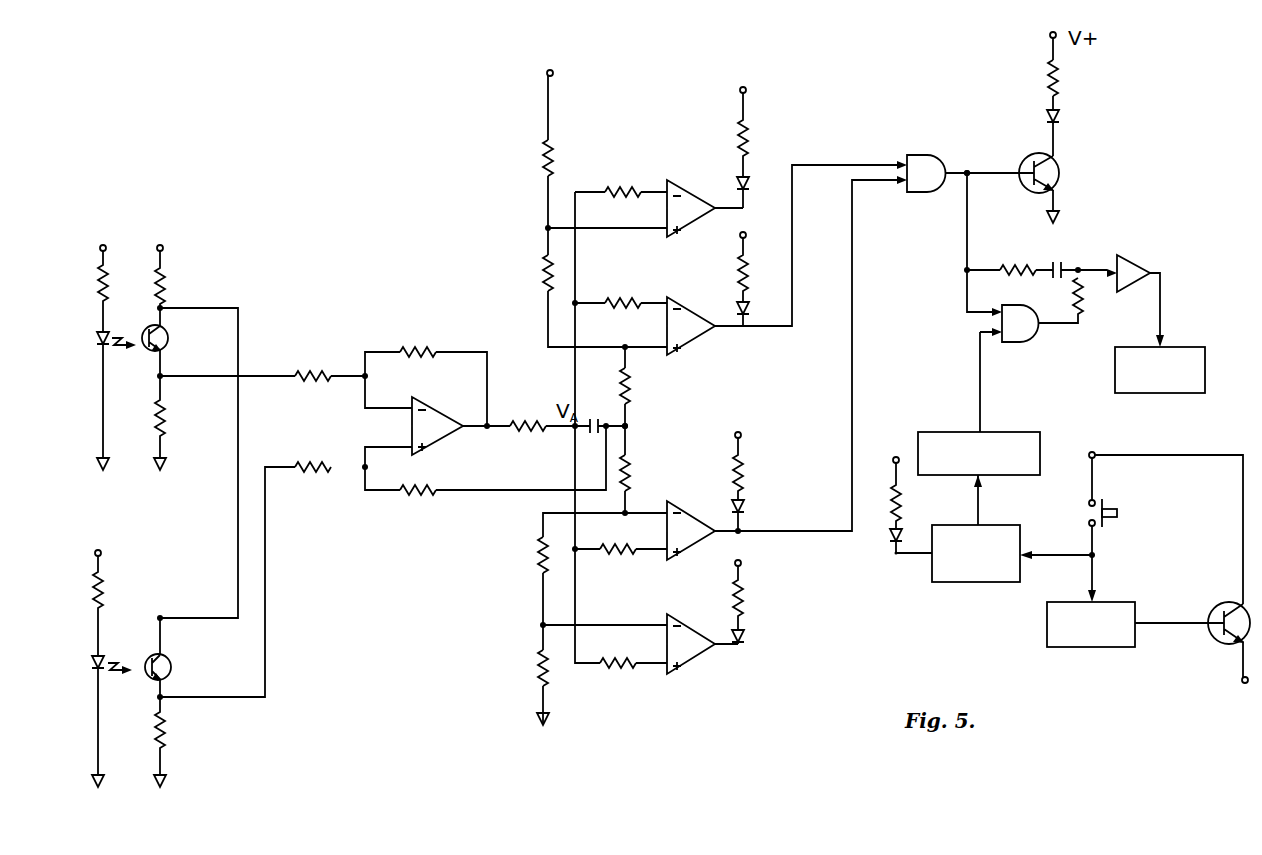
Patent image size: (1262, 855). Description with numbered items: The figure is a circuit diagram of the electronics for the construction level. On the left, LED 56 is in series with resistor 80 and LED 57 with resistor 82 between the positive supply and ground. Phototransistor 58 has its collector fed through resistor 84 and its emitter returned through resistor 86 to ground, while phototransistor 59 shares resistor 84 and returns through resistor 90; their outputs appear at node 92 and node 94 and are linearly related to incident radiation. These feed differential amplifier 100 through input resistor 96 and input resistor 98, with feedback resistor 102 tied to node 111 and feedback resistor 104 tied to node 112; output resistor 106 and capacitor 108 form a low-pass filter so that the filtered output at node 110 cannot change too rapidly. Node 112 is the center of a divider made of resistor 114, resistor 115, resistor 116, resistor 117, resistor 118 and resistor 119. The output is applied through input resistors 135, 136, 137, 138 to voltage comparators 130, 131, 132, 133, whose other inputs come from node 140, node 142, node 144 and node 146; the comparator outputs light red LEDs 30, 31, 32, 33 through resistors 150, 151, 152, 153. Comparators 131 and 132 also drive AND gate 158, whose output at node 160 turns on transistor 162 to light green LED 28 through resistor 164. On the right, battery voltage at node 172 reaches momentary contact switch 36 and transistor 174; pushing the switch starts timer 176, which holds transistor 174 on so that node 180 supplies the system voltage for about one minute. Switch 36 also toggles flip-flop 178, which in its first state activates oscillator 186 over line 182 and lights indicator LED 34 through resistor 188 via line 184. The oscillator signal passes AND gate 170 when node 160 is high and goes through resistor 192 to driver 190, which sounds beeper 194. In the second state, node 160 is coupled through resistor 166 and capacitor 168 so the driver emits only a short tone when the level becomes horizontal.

The green LED 28 is at (1063, 122).
The red LED 30 is at (752, 185).
The red LED 31 is at (750, 308).
The red LED 32 is at (750, 507).
The red LED 33 is at (749, 634).
The indicator LED 34 is at (884, 540).
The momentary contact switch 36 is at (1082, 514).
The LED 56 is at (97, 338).
The LED 57 is at (90, 662).
The phototransistor 58 is at (169, 339).
The phototransistor 59 is at (173, 667).
The resistor 80 is at (102, 282).
The resistor 82 is at (103, 587).
The resistor 84 is at (165, 284).
The resistor 86 is at (166, 418).
The resistor 90 is at (168, 736).
The node 92 is at (165, 376).
The node 94 is at (169, 704).
The input resistor 96 is at (313, 372).
The input resistor 98 is at (315, 475).
The differential amplifier 100 is at (438, 434).
The feedback resistor 102 is at (418, 347).
The feedback resistor 104 is at (420, 496).
The output resistor 106 is at (520, 420).
The capacitor 108 is at (594, 418).
The node 110 is at (572, 430).
The node 111 is at (488, 429).
The node 112 is at (631, 427).
The resistor 114 is at (556, 154).
The resistor 115 is at (544, 278).
The resistor 116 is at (633, 385).
The resistor 117 is at (633, 473).
The resistor 118 is at (538, 563).
The resistor 119 is at (540, 673).
The voltage comparator 130 is at (688, 195).
The voltage comparator 131 is at (688, 314).
The voltage comparator 132 is at (690, 520).
The voltage comparator 133 is at (688, 632).
The input resistor 135 is at (622, 185).
The input resistor 136 is at (622, 299).
The input resistor 137 is at (616, 559).
The input resistor 138 is at (618, 676).
The node 140 is at (546, 228).
The node 142 is at (621, 354).
The node 144 is at (624, 518).
The node 146 is at (540, 625).
The resistor 150 is at (752, 142).
The resistor 151 is at (748, 277).
The resistor 152 is at (747, 474).
The resistor 153 is at (750, 601).
The AND gate 158 is at (920, 152).
The node 160 is at (972, 170).
The transistor 162 is at (1063, 176).
The resistor 164 is at (1060, 77).
The resistor 166 is at (1014, 268).
The capacitor 168 is at (1063, 262).
The AND gate 170 is at (1018, 342).
The node 172 is at (1098, 460).
The transistor 174 is at (1214, 608).
The timer 176 is at (1086, 648).
The flip-flop 178 is at (965, 582).
The node 180 is at (1242, 680).
The line 182 is at (975, 492).
The line 184 is at (910, 556).
The oscillator 186 is at (924, 432).
The resistor 188 is at (893, 506).
The driver 190 is at (1140, 266).
The resistor 192 is at (1084, 309).
The beeper 194 is at (1170, 347).